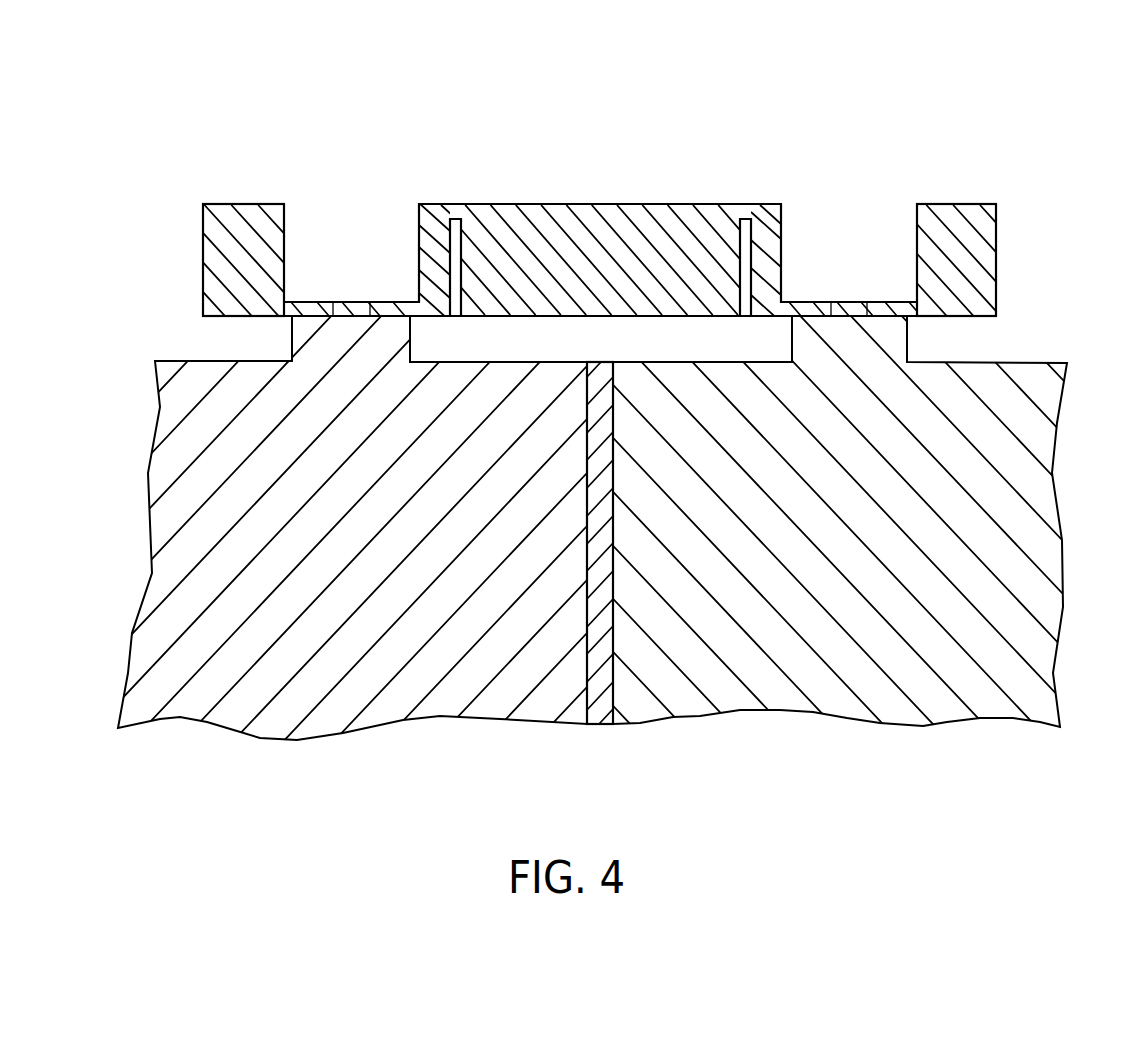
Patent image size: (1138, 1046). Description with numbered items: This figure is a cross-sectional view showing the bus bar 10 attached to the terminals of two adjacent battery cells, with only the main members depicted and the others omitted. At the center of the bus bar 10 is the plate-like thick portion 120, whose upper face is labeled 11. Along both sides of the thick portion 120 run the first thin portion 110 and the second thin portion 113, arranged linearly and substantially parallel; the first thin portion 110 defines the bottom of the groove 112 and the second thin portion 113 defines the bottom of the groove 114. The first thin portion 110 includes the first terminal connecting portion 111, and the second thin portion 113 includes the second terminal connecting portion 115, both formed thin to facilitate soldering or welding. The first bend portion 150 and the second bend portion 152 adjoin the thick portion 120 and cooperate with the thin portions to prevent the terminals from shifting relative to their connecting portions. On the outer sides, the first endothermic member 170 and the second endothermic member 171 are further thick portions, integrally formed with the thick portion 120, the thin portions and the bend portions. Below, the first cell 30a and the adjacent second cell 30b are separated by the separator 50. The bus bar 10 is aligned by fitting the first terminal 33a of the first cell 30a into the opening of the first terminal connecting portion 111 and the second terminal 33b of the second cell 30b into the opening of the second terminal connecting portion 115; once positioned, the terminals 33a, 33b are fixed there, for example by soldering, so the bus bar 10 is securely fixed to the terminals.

The bus bar 10 is at (914, 108).
The nozzle surface 11 is at (683, 204).
The first thin portion 110 is at (308, 302).
The first terminal connecting portion 111 is at (334, 302).
The groove 112 is at (340, 188).
The second thin portion 113 is at (883, 302).
The groove 114 is at (864, 192).
The second terminal connecting portion 115 is at (831, 302).
The thick portion 120 is at (520, 192).
The first bend portion 150 is at (417, 232).
The second bend portion 152 is at (783, 210).
The first endothermic member 170 is at (234, 204).
The second endothermic member 171 is at (963, 204).
The first cell 30a is at (407, 700).
The second cell 30b is at (872, 700).
The first terminal 33a is at (353, 302).
The second terminal 33b is at (850, 302).
The separator 50 is at (600, 713).